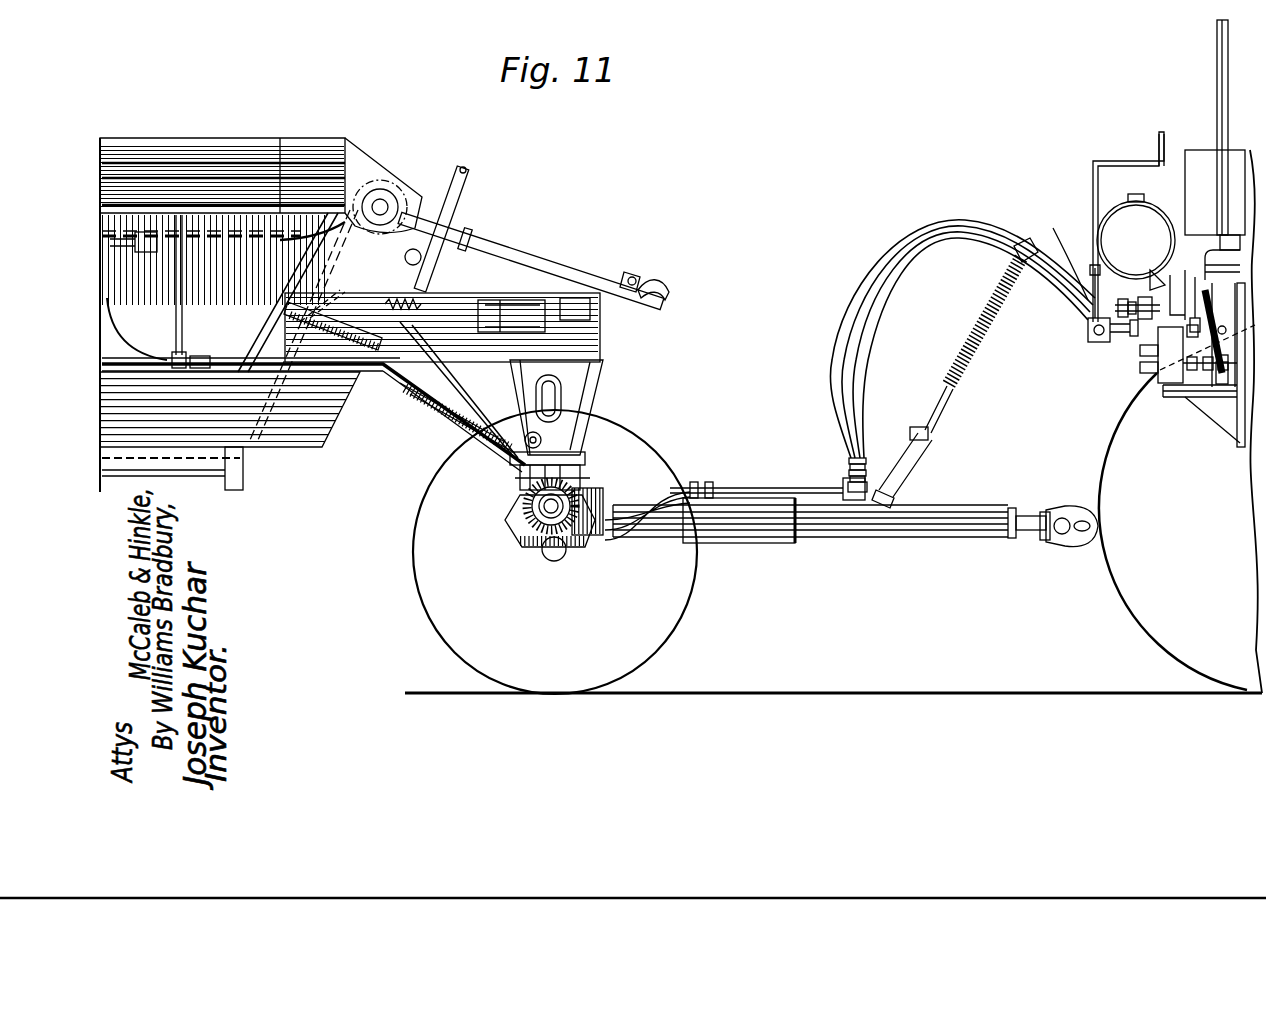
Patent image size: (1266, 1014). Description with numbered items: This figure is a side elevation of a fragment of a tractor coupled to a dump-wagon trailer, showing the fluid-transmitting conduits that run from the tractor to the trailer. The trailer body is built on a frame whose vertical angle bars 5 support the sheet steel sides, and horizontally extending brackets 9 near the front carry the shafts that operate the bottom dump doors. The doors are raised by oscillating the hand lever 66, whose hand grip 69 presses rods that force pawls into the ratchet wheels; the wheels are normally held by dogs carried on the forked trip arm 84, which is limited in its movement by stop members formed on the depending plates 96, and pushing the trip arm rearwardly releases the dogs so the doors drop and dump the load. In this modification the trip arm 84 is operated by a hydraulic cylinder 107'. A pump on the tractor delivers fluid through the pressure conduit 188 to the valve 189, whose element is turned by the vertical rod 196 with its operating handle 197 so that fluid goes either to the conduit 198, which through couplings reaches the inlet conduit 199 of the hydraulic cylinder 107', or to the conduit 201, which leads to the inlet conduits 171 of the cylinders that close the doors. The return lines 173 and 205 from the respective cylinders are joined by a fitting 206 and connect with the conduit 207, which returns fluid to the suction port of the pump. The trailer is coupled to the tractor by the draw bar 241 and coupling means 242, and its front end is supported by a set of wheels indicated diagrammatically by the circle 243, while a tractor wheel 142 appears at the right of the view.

The vertical angle bars 5 is at (178, 313).
The horizontally extending brackets 9 is at (377, 171).
The hand lever 66 is at (558, 262).
The hand grip 69 is at (653, 277).
The trip arm 84 is at (473, 243).
The web portions or plates 96 is at (402, 263).
The hydraulic cylinder 107' is at (534, 291).
The tractor wheel 142 is at (1126, 624).
The inlet conduit 171 is at (104, 318).
The outlet conduit 173 is at (140, 369).
The pressure conduit 188 is at (1142, 337).
The valve 189 is at (1092, 338).
The vertical rod 196 is at (1092, 170).
The operating handle 197 is at (1160, 137).
The conduit 198 is at (903, 260).
The inlet conduit 199 is at (413, 384).
The conduit 201 is at (857, 297).
The return line 205 is at (593, 333).
The fitting 206 is at (498, 483).
The conduit 207 is at (857, 272).
The draw bar 241 is at (908, 543).
The coupling means 242 is at (1047, 552).
The set of wheels 243 is at (672, 616).